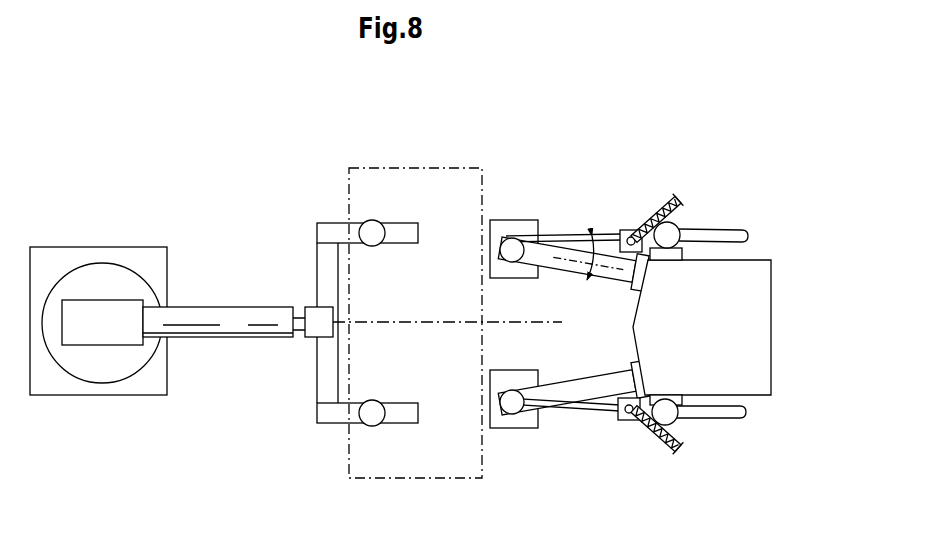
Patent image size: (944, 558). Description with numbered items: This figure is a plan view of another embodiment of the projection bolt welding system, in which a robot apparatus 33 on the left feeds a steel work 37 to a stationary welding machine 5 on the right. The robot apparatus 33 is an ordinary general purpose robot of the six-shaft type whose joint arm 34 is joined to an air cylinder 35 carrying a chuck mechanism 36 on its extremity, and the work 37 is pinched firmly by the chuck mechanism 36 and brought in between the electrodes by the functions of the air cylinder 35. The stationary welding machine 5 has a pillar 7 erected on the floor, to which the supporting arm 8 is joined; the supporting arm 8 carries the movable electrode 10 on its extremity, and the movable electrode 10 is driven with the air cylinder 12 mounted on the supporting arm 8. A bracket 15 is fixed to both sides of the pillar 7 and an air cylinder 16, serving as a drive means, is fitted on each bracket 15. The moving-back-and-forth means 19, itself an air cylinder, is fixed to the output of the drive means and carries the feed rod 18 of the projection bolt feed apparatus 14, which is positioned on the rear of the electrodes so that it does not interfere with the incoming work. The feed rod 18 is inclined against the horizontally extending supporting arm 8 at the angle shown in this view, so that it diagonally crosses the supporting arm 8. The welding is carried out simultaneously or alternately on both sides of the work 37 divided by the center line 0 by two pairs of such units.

The center line 0 is at (405, 320).
The stationary welding machine 5 is at (647, 325).
The pillar 7 is at (773, 343).
The supporting arm 8 is at (615, 287).
The movable electrode 10 is at (490, 252).
The air cylinder 12 is at (507, 220).
The projection bolt feed apparatus 14 is at (648, 201).
The bracket 15 is at (683, 253).
The air cylinder 16 is at (680, 227).
The feed rod 18 is at (590, 233).
The moving-back-and-forth means 19 is at (738, 227).
The robot apparatus 33 is at (87, 240).
The joint arm 34 is at (100, 345).
The air cylinder 35 is at (220, 303).
The chuck mechanism 36 is at (305, 226).
The steel work 37 is at (390, 168).